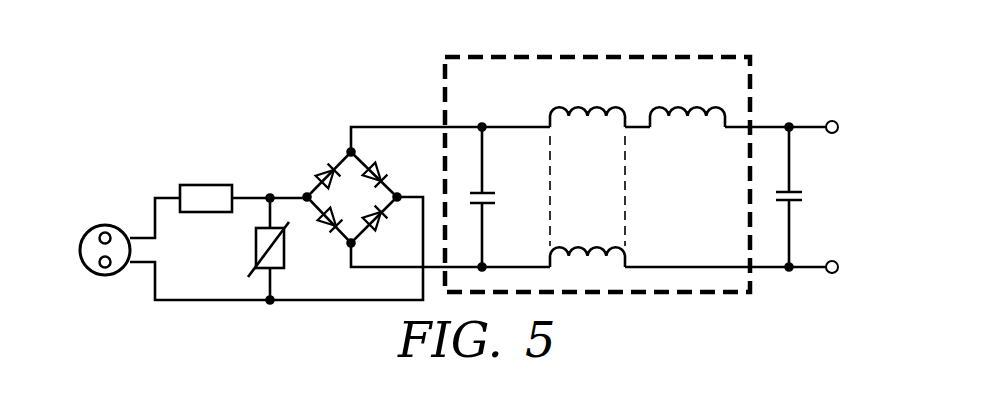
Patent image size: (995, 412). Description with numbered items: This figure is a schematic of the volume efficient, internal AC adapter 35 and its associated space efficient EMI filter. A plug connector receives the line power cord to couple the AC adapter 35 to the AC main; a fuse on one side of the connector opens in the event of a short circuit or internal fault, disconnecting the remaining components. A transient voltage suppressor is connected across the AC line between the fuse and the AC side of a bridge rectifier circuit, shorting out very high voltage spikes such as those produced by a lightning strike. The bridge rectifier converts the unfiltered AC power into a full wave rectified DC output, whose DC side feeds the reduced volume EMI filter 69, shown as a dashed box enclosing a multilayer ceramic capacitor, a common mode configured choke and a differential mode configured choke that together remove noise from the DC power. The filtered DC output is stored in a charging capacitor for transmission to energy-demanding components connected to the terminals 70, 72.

The internal AC adapter 35 is at (475, 152).
The reduced volume EMI filter 69 is at (612, 57).
The terminal 70 is at (839, 125).
The terminal 72 is at (839, 269).